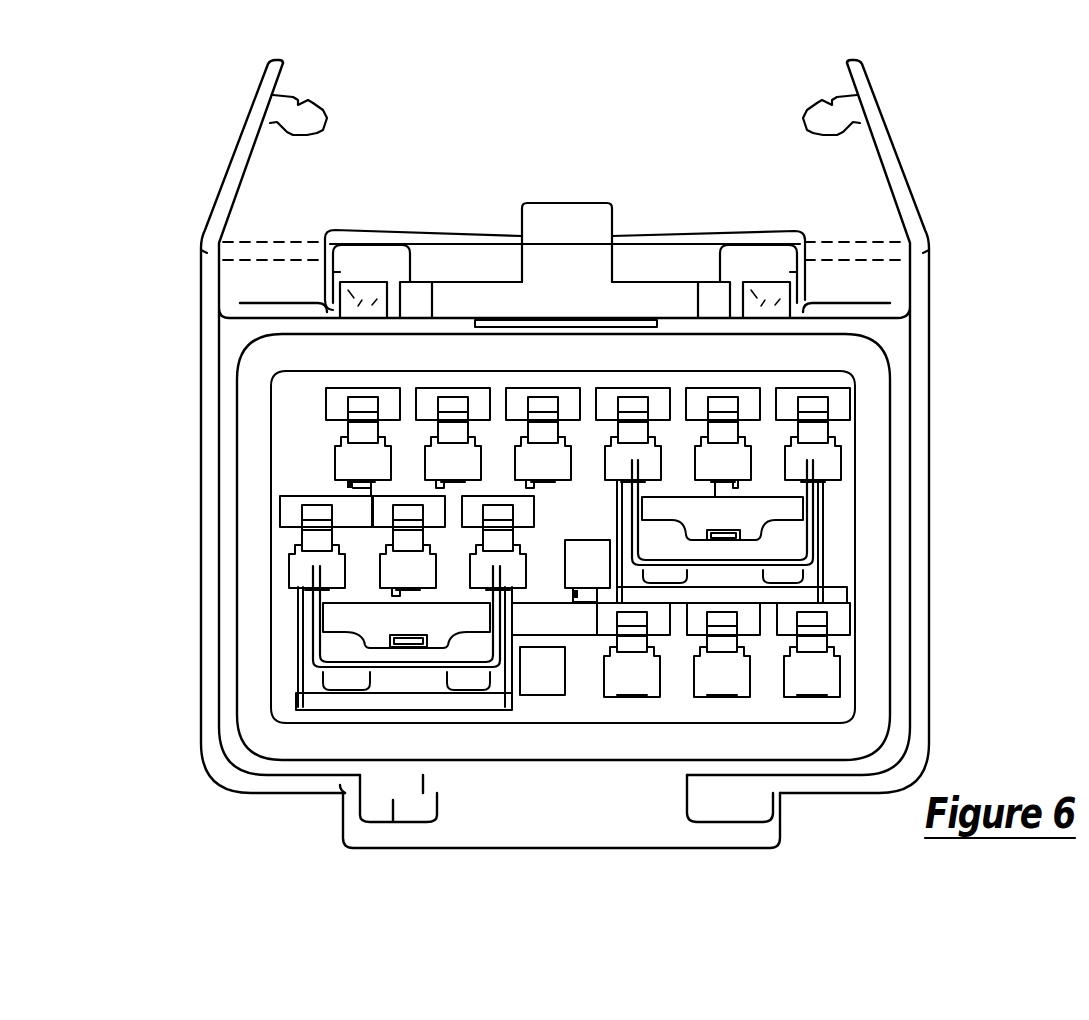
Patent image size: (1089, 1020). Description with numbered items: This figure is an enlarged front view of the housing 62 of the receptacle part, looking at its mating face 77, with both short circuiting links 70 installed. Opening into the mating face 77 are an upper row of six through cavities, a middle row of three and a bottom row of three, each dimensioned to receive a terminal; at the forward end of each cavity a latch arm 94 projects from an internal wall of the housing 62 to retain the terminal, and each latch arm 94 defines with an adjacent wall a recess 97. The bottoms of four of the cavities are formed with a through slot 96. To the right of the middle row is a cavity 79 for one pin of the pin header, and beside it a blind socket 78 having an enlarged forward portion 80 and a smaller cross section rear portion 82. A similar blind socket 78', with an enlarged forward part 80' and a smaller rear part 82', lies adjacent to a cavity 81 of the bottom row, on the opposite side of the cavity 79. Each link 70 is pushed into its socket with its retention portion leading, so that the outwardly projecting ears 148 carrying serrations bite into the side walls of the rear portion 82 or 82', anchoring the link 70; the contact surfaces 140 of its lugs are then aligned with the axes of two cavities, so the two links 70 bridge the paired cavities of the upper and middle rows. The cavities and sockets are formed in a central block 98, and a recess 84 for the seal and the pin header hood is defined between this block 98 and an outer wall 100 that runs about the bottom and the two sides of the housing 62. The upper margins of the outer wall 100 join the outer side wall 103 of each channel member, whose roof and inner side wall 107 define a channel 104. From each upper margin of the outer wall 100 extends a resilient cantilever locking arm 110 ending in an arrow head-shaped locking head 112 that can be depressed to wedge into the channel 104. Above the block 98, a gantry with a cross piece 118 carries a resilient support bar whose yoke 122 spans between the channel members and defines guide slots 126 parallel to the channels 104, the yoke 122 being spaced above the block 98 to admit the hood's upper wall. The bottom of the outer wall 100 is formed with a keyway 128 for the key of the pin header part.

The housing 62 is at (930, 504).
The short circuiting link 70 is at (830, 547).
The mating face 77 is at (842, 482).
The blind socket 78 is at (764, 576).
The blind socket 78' is at (378, 715).
The enlarged forward portion 80 is at (797, 577).
The enlarged forward part 80' is at (403, 696).
The rear portion 82 is at (722, 583).
The rear part 82' is at (406, 680).
The recess 84 is at (922, 370).
The latch arm 94 is at (348, 427).
The through slot 96 is at (835, 528).
The recess 97 is at (365, 397).
The central block 98 is at (868, 430).
The outer wall 100 is at (929, 698).
The outer side wall 103 is at (325, 250).
The channel 104 is at (368, 292).
The inner side wall 107 is at (432, 282).
The locking arm 110 is at (232, 148).
The locking head 112 is at (310, 122).
The cross piece 118 is at (627, 238).
The yoke 122 is at (550, 305).
The guide slot 126 is at (424, 304).
The keyway 128 is at (345, 830).
The contact surface 140 is at (787, 467).
The ear 148 is at (502, 694).
The cavity 79 is at (588, 560).
The cavity 81 is at (552, 673).